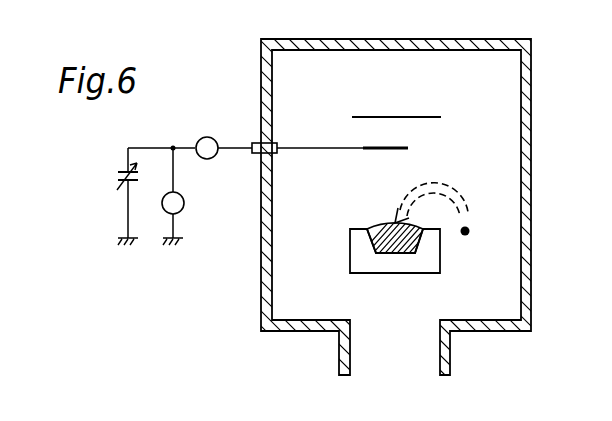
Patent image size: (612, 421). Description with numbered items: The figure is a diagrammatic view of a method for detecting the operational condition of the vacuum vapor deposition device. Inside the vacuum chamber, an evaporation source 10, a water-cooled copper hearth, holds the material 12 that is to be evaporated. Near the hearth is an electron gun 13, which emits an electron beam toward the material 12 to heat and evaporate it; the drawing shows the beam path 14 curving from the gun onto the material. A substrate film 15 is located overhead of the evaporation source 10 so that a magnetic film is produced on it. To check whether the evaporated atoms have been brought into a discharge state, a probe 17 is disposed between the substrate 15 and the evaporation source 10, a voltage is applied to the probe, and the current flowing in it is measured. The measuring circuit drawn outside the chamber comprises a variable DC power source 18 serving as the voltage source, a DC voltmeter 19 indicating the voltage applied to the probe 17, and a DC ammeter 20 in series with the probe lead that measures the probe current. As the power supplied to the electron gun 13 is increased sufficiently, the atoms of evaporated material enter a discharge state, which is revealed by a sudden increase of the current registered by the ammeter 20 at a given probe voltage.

The evaporation source 10 is at (336, 276).
The material 12 is at (388, 222).
The electron gun 13 is at (465, 236).
The particle beam path 14 is at (434, 182).
The substrate film 15 is at (383, 113).
The probe 17 is at (373, 147).
The variable DC power source 18 is at (113, 179).
The DC voltmeter 19 is at (184, 207).
The DC ammeter 20 is at (205, 136).